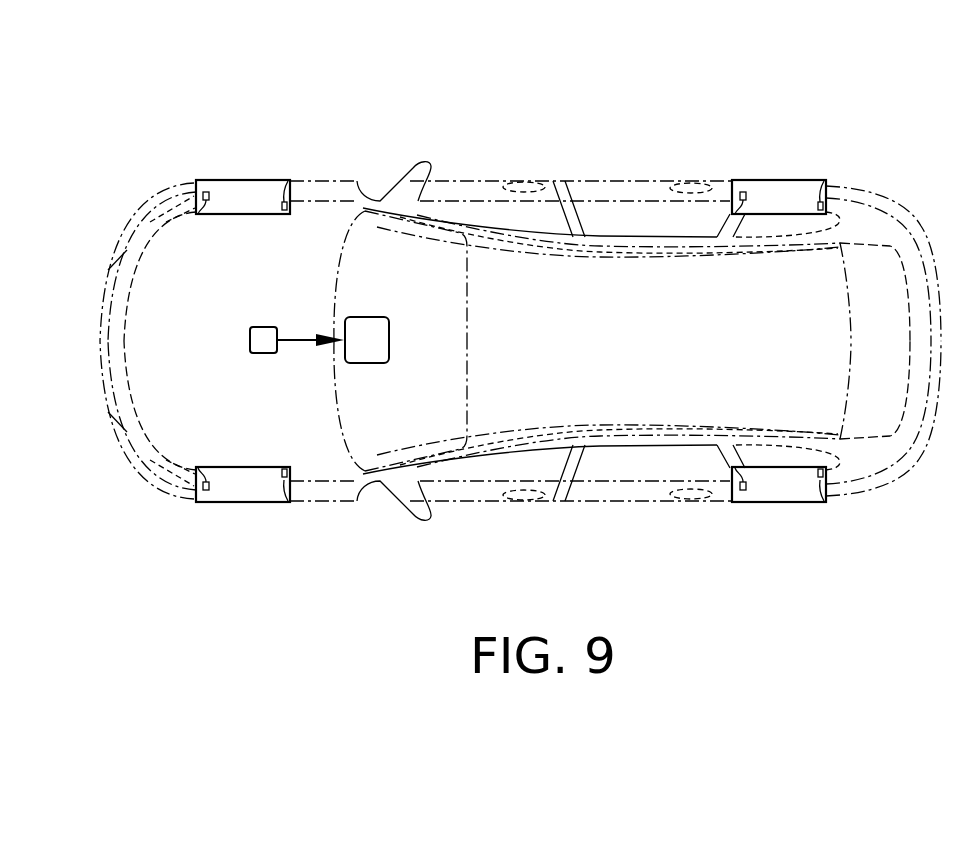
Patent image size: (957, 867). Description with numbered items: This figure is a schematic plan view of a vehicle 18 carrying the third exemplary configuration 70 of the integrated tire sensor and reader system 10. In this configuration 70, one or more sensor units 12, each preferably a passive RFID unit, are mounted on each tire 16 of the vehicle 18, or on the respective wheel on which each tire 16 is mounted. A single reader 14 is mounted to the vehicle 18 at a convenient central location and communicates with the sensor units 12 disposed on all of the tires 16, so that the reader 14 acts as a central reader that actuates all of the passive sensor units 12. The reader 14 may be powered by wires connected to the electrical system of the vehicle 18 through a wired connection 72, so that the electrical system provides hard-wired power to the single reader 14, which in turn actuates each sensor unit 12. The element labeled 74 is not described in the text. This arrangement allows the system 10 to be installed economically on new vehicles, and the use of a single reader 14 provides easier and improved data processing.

The integrated tire sensor and reader system 10 is at (598, 90).
The sensor unit 12 is at (200, 182).
The reader 14 is at (367, 317).
The tire 16 is at (270, 178).
The vehicle 18 is at (588, 176).
The third exemplary configuration 70 is at (503, 155).
The wired connection 72 is at (296, 341).
The transmitter 74 is at (250, 339).